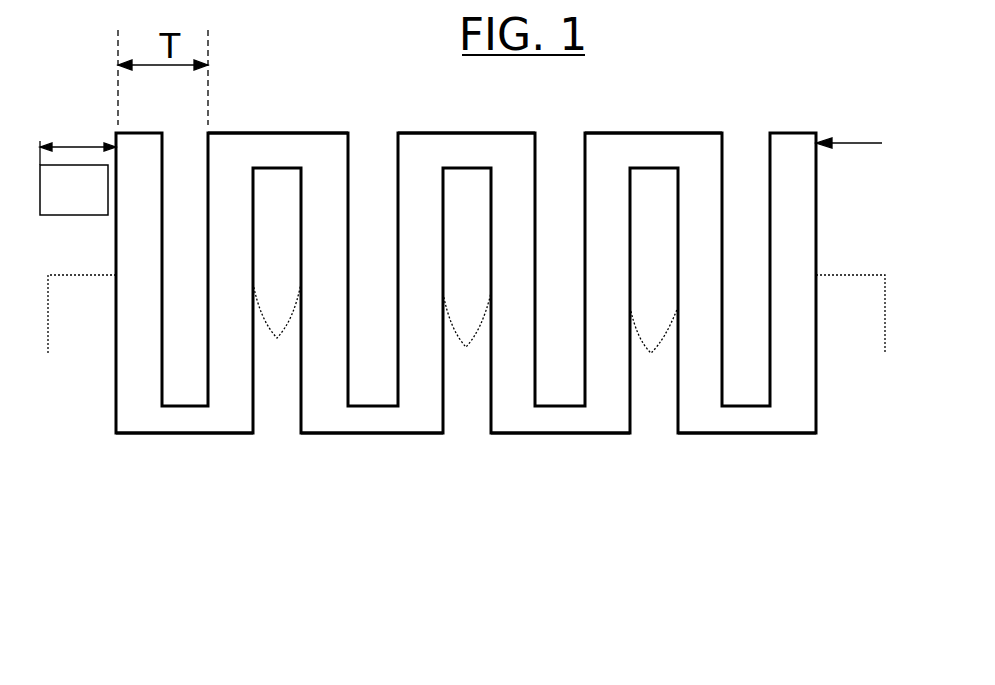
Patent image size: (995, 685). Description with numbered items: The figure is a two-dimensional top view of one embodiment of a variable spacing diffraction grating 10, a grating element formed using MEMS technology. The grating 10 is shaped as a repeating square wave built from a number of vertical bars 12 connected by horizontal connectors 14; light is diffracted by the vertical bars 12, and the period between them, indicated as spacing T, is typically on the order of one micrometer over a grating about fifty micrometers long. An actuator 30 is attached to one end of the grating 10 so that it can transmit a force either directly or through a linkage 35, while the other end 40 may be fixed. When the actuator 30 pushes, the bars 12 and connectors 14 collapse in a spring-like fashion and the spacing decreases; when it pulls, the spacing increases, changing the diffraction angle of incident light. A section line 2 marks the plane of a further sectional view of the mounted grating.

The variable spacing diffraction grating 10 is at (803, 332).
The vertical bars 12 is at (277, 338).
The horizontal connectors 14 is at (283, 133).
The actuator 30 is at (74, 190).
The linkage 35 is at (78, 132).
The other end 40 is at (849, 166).
The section line 2- 2 is at (470, 339).